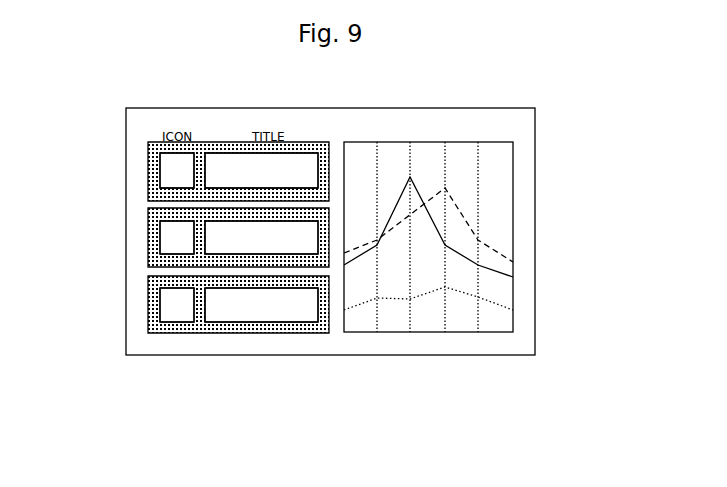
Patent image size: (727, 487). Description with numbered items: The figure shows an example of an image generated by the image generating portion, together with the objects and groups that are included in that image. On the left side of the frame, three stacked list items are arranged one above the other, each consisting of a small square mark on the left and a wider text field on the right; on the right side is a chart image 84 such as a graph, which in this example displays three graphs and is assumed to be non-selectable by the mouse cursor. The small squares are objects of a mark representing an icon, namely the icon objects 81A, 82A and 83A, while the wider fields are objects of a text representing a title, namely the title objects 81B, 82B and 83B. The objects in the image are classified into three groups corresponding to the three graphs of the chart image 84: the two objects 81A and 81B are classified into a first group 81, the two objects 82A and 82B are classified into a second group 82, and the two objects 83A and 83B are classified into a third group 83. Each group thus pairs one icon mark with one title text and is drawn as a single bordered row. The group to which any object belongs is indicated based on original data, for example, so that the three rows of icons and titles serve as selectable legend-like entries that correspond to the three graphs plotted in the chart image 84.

The first group 81 is at (217, 142).
The object of a mark representing an icon 81A is at (160, 172).
The object of a text representing a title 81B is at (308, 150).
The second group 82 is at (293, 267).
The object of a mark representing an icon 82A is at (160, 240).
The object of a text representing a title 82B is at (237, 255).
The third group 83 is at (195, 333).
The object of a mark representing an icon 83A is at (160, 305).
The object of a text representing a title 83B is at (240, 333).
The chart image 84 is at (513, 188).